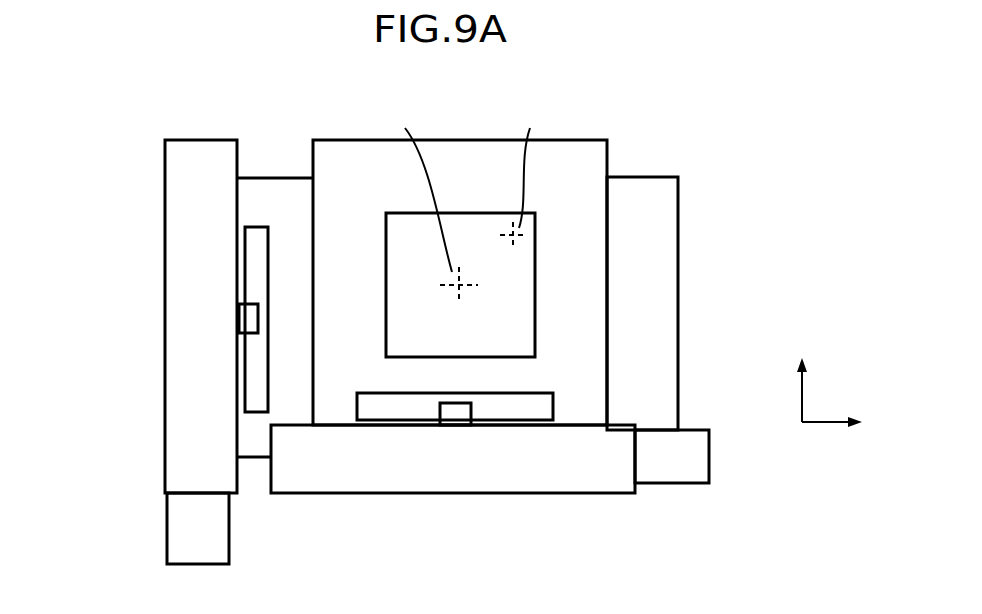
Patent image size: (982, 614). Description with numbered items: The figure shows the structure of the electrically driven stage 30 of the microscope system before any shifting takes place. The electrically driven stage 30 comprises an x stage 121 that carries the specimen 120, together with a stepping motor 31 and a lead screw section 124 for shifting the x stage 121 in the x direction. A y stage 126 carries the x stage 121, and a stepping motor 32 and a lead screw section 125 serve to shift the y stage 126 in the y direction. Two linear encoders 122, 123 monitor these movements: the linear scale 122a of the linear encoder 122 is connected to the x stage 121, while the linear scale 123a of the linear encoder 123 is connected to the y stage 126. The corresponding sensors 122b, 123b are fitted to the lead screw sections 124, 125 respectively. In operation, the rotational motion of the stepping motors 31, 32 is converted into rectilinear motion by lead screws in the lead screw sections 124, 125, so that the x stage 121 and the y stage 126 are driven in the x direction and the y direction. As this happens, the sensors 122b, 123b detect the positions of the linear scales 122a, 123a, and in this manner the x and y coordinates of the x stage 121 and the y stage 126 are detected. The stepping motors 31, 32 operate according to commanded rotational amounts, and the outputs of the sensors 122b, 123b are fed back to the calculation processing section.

The electrically driven stage 30 is at (643, 120).
The stepping motor 31 is at (690, 460).
The stepping motor 32 is at (213, 532).
The specimen 120 is at (523, 275).
The x stage 121 is at (592, 160).
The linear encoder 122 is at (562, 538).
The linear scale 122a is at (537, 412).
The sensor 122b is at (453, 418).
The linear encoder 123 is at (88, 238).
The linear scale 123a is at (258, 269).
The sensor 123b is at (243, 315).
The lead screw section 124 is at (597, 477).
The lead screw section 125 is at (178, 445).
The y stage 126 is at (666, 216).